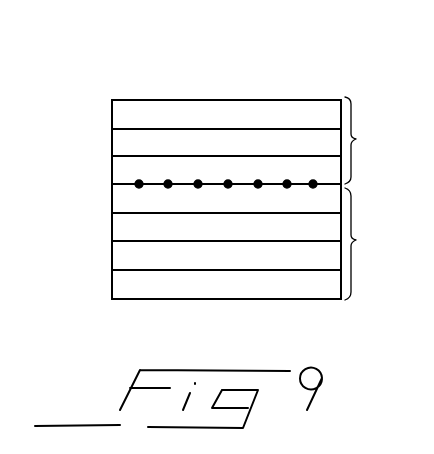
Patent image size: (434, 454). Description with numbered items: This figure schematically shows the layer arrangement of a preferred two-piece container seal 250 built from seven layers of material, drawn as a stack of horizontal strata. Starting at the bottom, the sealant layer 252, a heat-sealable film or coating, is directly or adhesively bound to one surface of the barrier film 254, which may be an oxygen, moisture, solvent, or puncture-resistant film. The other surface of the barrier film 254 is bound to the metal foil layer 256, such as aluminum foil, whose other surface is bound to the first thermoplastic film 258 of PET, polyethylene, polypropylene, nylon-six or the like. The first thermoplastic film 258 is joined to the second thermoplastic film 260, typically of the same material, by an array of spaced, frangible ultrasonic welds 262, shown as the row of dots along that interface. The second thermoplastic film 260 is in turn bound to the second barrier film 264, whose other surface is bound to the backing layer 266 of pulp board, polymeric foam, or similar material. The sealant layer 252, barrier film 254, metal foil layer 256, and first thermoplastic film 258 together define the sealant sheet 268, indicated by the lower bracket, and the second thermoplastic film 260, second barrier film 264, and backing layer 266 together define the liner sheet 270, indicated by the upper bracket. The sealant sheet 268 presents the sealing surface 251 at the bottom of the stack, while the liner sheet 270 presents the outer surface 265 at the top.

The two-piece container seal 250 is at (156, 322).
The sealing surface 251 is at (305, 302).
The sealant layer 252 is at (125, 288).
The barrier film 254 is at (125, 258).
The metal foil layer 256 is at (125, 228).
The first thermoplastic film 258 is at (125, 199).
The second thermoplastic film 260 is at (125, 171).
The frangible ultrasonic welds 262 is at (285, 178).
The second barrier film 264 is at (125, 143).
The outer surface 265 is at (229, 89).
The backing layer 266 is at (125, 115).
The sealant sheet 268 is at (376, 244).
The liner sheet 270 is at (376, 140).